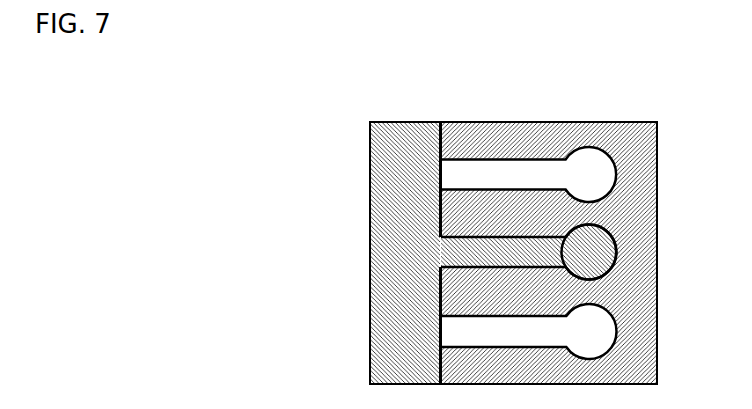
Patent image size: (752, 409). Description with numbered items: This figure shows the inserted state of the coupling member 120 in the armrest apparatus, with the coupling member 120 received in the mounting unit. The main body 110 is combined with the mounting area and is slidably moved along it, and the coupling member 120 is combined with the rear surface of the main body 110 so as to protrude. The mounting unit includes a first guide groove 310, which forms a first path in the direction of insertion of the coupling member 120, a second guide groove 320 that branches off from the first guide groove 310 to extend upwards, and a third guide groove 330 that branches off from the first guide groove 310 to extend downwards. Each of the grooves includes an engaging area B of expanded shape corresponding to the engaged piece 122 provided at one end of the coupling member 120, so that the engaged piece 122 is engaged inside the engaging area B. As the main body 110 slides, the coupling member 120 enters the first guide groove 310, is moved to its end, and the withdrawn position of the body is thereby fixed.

The main body 110 is at (395, 255).
The coupling member 120 is at (512, 250).
The engaged piece 122 is at (583, 246).
The first guide groove 310 is at (458, 245).
The second guide groove 320 is at (470, 161).
The third guide groove 330 is at (462, 321).
The engaging area B is at (600, 172).